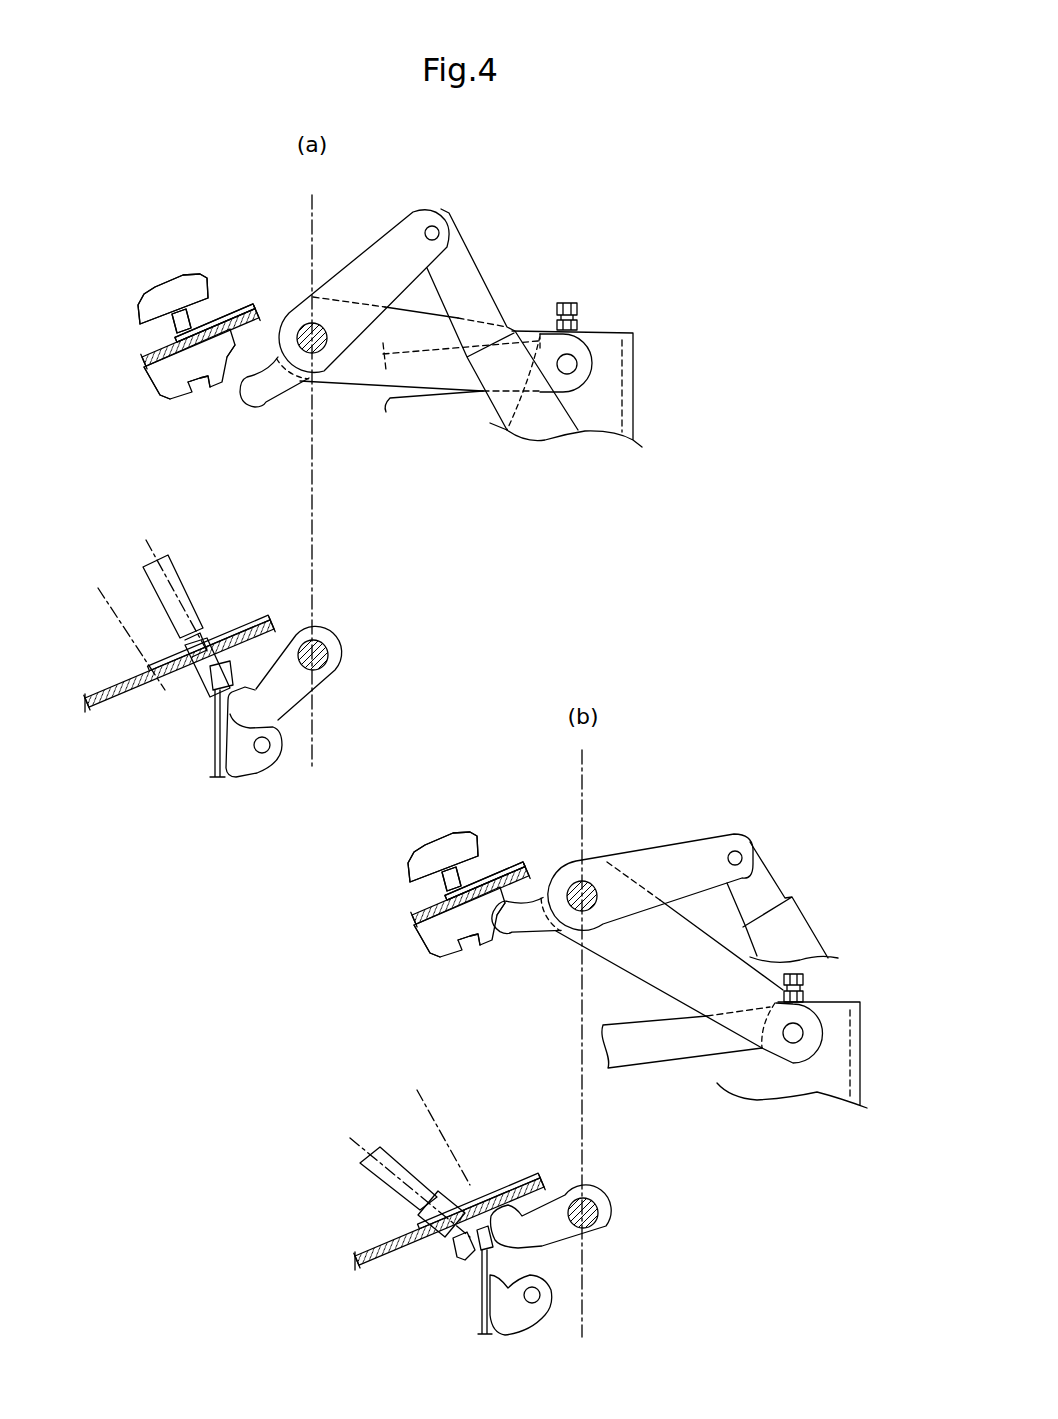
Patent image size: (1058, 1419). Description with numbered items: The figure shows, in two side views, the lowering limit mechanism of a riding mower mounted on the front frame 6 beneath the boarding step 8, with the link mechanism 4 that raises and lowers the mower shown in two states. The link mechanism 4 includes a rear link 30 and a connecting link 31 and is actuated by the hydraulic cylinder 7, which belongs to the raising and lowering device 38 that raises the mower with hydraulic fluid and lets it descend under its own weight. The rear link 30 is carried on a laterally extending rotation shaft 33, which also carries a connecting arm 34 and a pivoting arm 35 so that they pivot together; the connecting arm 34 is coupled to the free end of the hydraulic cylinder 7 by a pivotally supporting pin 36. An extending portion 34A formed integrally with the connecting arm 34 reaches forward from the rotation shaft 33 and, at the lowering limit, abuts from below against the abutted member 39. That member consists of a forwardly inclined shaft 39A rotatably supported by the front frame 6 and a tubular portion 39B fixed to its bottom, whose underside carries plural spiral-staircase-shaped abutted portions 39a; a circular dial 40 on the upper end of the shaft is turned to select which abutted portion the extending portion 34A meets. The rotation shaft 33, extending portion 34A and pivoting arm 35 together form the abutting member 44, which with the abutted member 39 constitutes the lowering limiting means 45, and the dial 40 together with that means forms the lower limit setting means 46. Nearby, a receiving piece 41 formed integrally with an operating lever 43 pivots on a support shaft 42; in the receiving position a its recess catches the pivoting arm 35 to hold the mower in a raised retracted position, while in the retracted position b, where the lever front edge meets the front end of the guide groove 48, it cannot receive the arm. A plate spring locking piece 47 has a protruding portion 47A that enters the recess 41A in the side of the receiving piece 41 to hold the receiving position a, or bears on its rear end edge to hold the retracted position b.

The link mechanism 4 is at (621, 298).
The front frame 6 is at (148, 377).
The hydraulic cylinder 7 is at (665, 585).
The raising and lowering device 38 is at (477, 297).
The boarding step 8 is at (229, 305).
The rear link 30 is at (362, 373).
The connecting link 31 is at (431, 398).
The rotation shaft 33 is at (320, 330).
The connecting arm 34 is at (485, 577).
The extending portion 34A is at (264, 397).
The pivoting arm 35 is at (290, 720).
The pivotally supporting pin 36 is at (442, 231).
The abutted member 39 is at (286, 676).
The forwardly inclined shaft 39A is at (170, 336).
The tubular portion 39B is at (165, 372).
The abutted portions 39a is at (205, 380).
The dial 40 is at (160, 294).
The receiving piece 41 is at (368, 948).
The recess 41A is at (240, 643).
The support shaft 42 is at (261, 752).
The operating lever 43 is at (187, 592).
The abutting member 44 is at (496, 577).
The lowering limiting means 45 is at (223, 413).
The lower limit setting means 46 is at (172, 259).
The locking piece 47 is at (347, 1021).
The protruding portion 47A is at (208, 684).
The guide groove 48 is at (160, 660).
The receiving position a is at (302, 850).
The retracted position b is at (269, 901).